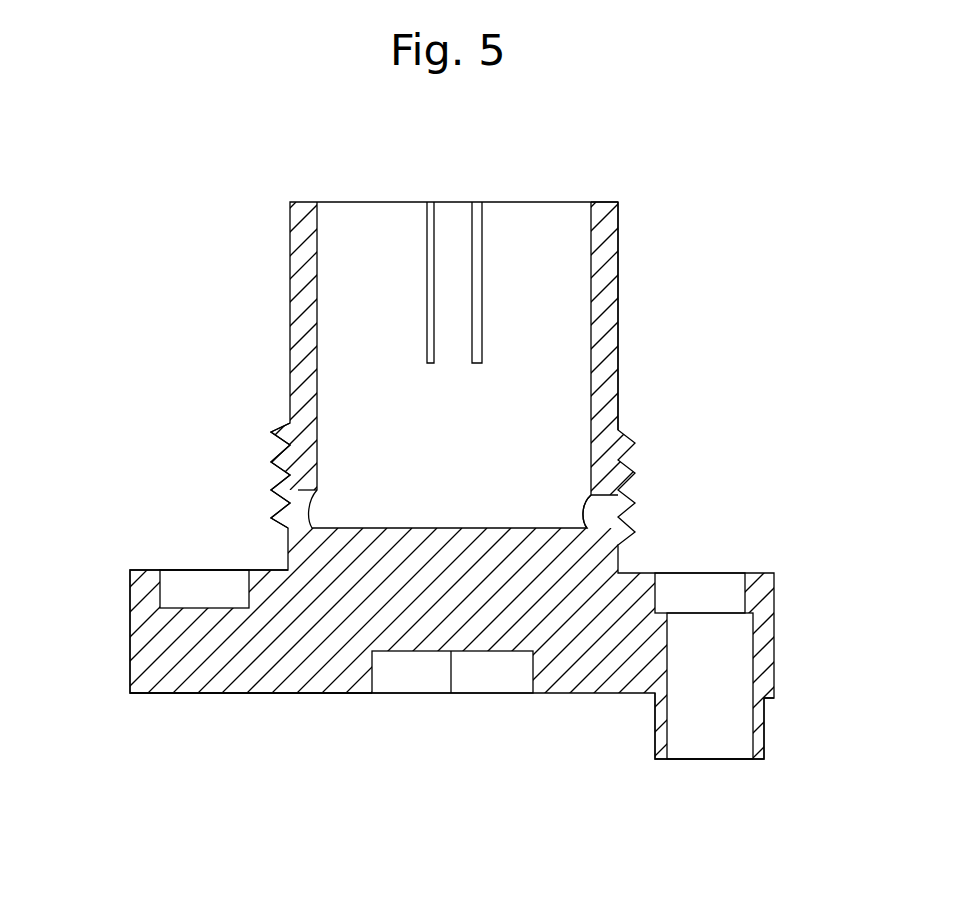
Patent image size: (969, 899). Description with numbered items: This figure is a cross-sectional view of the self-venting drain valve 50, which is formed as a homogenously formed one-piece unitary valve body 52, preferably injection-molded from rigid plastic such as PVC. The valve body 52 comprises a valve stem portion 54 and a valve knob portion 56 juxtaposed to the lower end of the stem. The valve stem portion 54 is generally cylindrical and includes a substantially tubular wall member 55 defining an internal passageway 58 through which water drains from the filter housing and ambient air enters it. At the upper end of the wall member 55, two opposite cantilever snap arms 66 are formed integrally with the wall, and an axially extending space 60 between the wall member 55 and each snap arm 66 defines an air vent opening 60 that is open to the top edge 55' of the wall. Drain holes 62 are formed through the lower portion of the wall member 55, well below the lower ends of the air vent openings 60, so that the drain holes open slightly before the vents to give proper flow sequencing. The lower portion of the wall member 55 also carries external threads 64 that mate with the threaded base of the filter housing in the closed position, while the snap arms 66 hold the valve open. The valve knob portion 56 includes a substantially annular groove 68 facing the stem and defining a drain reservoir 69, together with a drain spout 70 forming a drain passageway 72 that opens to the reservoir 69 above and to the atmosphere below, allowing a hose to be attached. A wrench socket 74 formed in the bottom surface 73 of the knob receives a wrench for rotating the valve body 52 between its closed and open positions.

The self-venting drain valve 50 is at (705, 296).
The one-piece unitary valve body 52 is at (312, 680).
The valve stem portion 54 is at (270, 311).
The tubular wall member 55 is at (654, 316).
The top edge of the wall member 55' is at (610, 167).
The valve knob portion 56 is at (105, 642).
The internal passageway 58 is at (354, 222).
The air vent opening 60 is at (431, 206).
The drain hole 62 is at (637, 508).
The external threads 64 is at (258, 423).
The cantilever snap arm 66 is at (462, 208).
The annular groove 68 is at (172, 602).
The drain reservoir 69 is at (725, 578).
The drain spout 70 is at (767, 733).
The drain passageway 72 is at (709, 750).
The bottom surface 73 is at (185, 693).
The wrench socket 74 is at (494, 682).